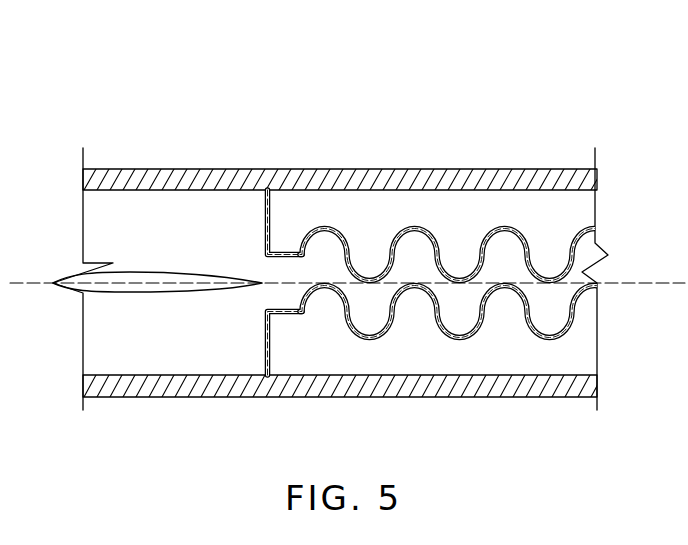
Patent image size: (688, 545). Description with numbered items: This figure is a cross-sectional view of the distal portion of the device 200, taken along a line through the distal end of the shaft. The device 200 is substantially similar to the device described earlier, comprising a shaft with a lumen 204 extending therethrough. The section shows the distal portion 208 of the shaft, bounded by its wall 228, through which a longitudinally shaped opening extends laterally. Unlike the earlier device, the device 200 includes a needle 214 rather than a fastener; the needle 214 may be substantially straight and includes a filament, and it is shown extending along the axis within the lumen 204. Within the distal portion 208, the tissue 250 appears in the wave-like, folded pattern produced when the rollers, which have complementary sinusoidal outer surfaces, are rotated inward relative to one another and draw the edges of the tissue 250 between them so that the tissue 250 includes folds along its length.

The device 200 is at (172, 84).
The lumen 204 is at (289, 208).
The distal portion 208 is at (420, 168).
The needle 214 is at (141, 275).
The wall 228 is at (573, 169).
The tissue 250 is at (515, 228).